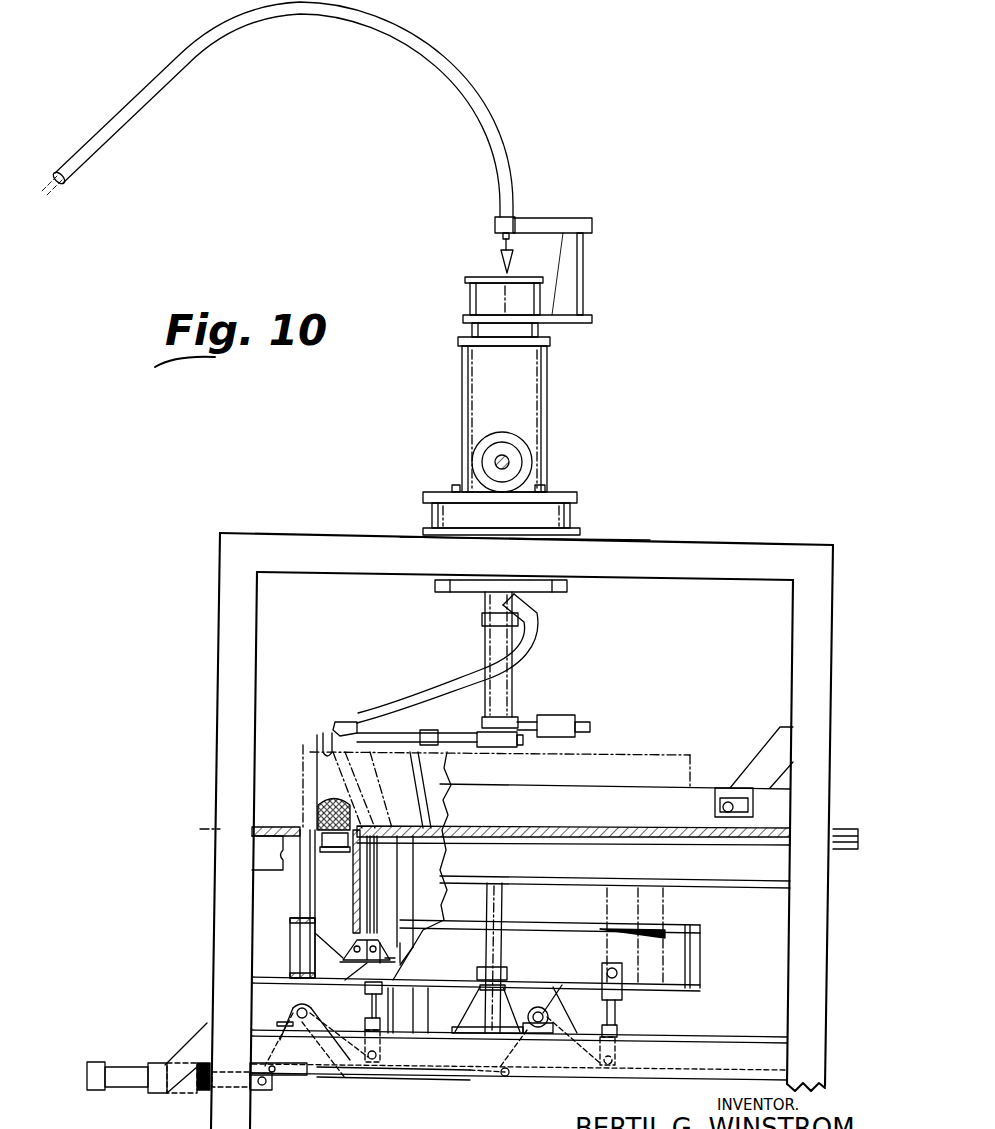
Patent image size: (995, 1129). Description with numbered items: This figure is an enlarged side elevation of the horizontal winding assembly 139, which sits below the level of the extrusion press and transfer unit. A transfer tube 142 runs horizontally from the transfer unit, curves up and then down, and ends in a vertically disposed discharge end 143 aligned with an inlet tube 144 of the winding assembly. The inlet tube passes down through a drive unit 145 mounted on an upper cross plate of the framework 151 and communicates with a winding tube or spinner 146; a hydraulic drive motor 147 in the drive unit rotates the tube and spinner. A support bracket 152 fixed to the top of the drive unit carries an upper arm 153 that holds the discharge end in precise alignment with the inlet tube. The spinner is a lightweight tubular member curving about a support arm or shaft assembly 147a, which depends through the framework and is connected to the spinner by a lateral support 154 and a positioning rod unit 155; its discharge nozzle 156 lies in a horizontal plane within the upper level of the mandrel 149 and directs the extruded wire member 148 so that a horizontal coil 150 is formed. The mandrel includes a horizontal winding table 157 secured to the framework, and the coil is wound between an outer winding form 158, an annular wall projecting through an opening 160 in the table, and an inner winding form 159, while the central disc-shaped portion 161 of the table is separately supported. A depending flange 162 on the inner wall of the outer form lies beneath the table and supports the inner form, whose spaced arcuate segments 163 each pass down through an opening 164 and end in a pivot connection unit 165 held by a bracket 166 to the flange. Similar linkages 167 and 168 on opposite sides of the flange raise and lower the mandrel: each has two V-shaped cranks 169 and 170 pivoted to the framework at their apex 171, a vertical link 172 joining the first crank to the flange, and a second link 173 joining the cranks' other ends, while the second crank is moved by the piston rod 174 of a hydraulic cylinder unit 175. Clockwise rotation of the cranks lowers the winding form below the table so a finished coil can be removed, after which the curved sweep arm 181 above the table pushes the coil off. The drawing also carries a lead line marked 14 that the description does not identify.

The apparatus 14 is at (484, 658).
The winding assembly 139 is at (730, 716).
The transfer tube 142 is at (127, 115).
The discharge end 143 is at (497, 216).
The inlet tube 144 is at (502, 258).
The drive unit 145 is at (537, 400).
The winding tube or spinner 146 is at (537, 648).
The hydraulic drive motor 147 is at (530, 463).
The support arm assembly 147a is at (513, 695).
The extruded wire member 148 is at (318, 792).
The mandrel 149 is at (303, 749).
The coil 150 is at (318, 814).
The framework 151 is at (218, 746).
The support bracket 152 is at (584, 280).
The upper arm 153 is at (580, 205).
The lateral support 154 is at (482, 620).
The positioning rod unit 155 is at (462, 732).
The discharge nozzle 156 is at (340, 733).
The winding table 157 is at (516, 836).
The outer winding form 158 is at (300, 765).
The inner winding form 159 is at (665, 752).
The opening 160 is at (292, 829).
The central disc-shaped portion 161 is at (410, 826).
The depending flange 162 is at (314, 952).
The arcuate segments 163 is at (398, 773).
The opening 164 is at (348, 851).
The pivot connection unit 165 is at (395, 950).
The bracket 166 is at (323, 975).
The linkage 167 is at (507, 1047).
The linkage 168 is at (272, 1043).
The V-shaped crank 169 is at (540, 1005).
The V-shaped crank 170 is at (347, 1082).
The pivot mounting 171 is at (300, 1010).
The vertical link 172 is at (375, 1010).
The second link 173 is at (397, 1080).
The piston rod 174 is at (255, 1091).
The hydraulic cylinder unit 175 is at (140, 1091).
The sweep arm 181 is at (690, 792).